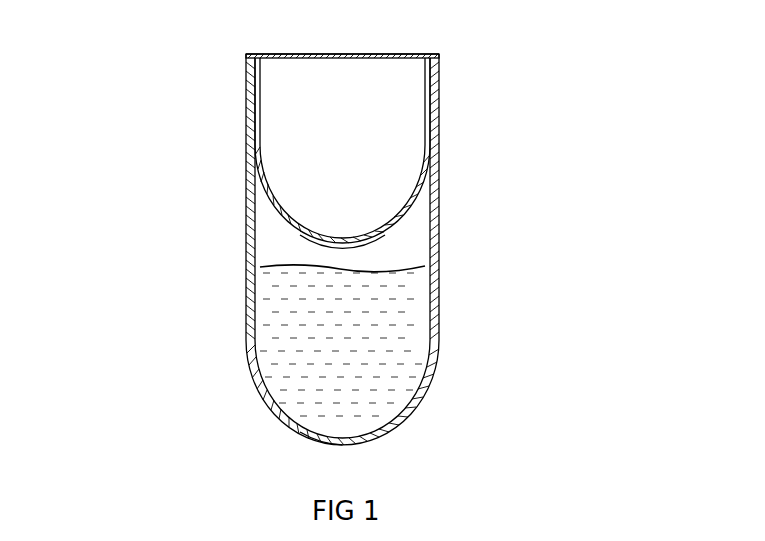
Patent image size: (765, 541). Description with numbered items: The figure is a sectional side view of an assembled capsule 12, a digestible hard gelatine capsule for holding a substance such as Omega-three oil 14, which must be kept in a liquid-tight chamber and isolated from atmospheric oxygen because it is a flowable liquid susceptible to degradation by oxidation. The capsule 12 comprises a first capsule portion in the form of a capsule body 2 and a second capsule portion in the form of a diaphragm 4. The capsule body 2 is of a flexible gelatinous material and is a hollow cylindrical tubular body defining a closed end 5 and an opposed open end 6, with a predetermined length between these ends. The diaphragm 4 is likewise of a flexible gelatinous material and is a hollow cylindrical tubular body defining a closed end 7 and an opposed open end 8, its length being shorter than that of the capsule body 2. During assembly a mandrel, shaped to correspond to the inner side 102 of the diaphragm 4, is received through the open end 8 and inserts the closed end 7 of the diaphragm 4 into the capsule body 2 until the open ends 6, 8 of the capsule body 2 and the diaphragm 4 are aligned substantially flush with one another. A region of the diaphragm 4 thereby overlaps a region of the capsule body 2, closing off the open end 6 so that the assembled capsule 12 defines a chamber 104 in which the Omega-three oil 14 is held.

The capsule 12 is at (329, 240).
The capsule body 2 is at (440, 212).
The open end of capsule body 6 is at (380, 54).
The open end of diaphragm 8 is at (344, 36).
The diaphragm 4 is at (272, 212).
The closed end of diaphragm 7 is at (310, 237).
The inner side of diaphragm 102 is at (423, 127).
The chamber 104 is at (411, 257).
The Omega-3 oil 14 is at (410, 358).
The closed end of capsule body 5 is at (292, 432).